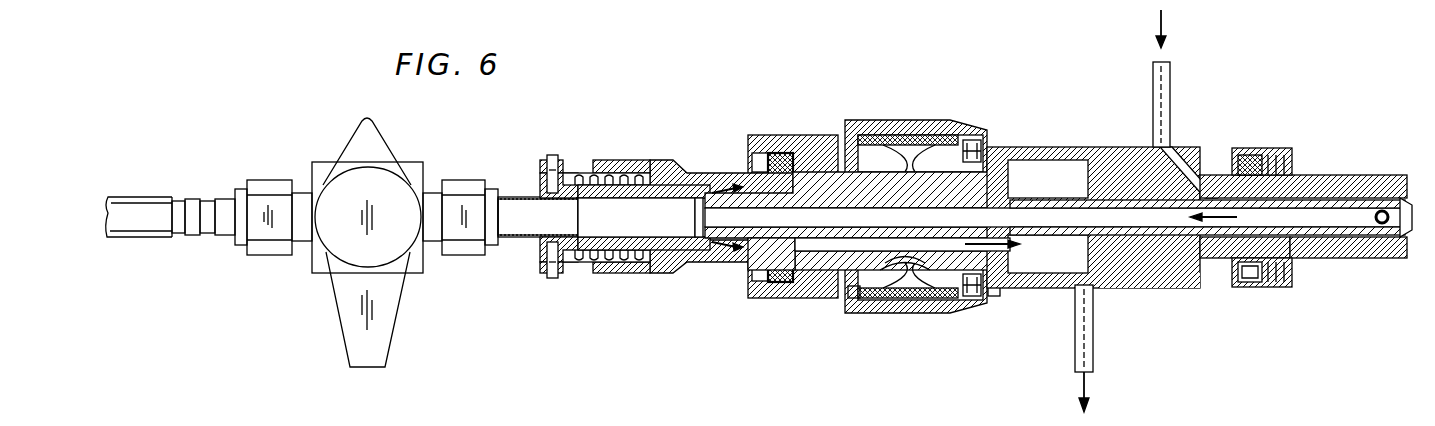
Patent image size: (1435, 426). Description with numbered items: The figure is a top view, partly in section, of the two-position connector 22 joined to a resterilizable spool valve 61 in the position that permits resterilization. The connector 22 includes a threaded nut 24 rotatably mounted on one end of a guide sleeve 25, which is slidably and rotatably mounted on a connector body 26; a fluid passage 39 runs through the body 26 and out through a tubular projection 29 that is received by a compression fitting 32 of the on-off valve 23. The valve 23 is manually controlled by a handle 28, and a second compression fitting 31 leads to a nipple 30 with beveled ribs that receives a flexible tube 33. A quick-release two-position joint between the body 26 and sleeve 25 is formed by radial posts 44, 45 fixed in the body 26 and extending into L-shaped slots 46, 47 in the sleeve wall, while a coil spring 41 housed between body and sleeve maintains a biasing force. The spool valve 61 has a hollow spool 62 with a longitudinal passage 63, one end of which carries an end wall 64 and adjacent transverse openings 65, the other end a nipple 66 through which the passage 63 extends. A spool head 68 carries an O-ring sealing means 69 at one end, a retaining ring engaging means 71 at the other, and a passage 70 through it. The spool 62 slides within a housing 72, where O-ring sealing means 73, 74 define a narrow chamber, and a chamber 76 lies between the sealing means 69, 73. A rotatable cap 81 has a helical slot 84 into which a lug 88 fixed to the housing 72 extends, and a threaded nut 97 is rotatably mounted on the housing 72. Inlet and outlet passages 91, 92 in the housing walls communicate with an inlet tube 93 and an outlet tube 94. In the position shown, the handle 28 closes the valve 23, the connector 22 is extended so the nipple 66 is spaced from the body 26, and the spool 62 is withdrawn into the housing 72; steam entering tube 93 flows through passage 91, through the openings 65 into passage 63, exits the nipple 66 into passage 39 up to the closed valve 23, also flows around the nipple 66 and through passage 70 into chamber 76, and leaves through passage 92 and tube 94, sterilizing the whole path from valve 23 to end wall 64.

The two-position connector 22 is at (695, 138).
The on-off valve 23 is at (294, 298).
The threaded nut 24 is at (800, 298).
The guide sleeve 25 is at (672, 268).
The connector body 26 is at (625, 190).
The handle 28 is at (385, 312).
The tubular projection 29 is at (515, 240).
The nipple 30 is at (205, 233).
The compression fitting 31 is at (270, 181).
The compression fitting 32 is at (470, 255).
The flexible tube 33 is at (141, 197).
The fluid passage 39 is at (524, 199).
The coil spring 41 is at (600, 178).
The radial post 44 is at (552, 156).
The radial post 45 is at (552, 279).
The L-shaped slot 46 is at (572, 165).
The L-shaped slot 47 is at (575, 270).
The resterilizable spool valve 61 is at (1233, 102).
The hollow spool 62 is at (1315, 195).
The longitudinal passage 63 is at (1140, 212).
The end wall 64 is at (1405, 198).
The transverse openings 65 is at (1360, 246).
The nipple 66 is at (735, 188).
The spool head 68 is at (930, 170).
The O-ring sealing means 69 is at (996, 297).
The passage 70 is at (908, 282).
The retaining ring engaging means 71 is at (868, 300).
The housing 72 is at (1160, 290).
The O-ring sealing means 73 is at (1100, 160).
The O-ring sealing means 74 is at (1385, 210).
The chamber 76 is at (1035, 178).
The rotatable cap 81 is at (845, 125).
The helical slot 84 is at (882, 138).
The lug 88 is at (975, 142).
The inlet fluid passage 91 is at (1186, 165).
The outlet fluid passage 92 is at (1062, 288).
The inlet tube 93 is at (1155, 80).
The outlet tube 94 is at (1090, 345).
The threaded nut 97 is at (1270, 150).